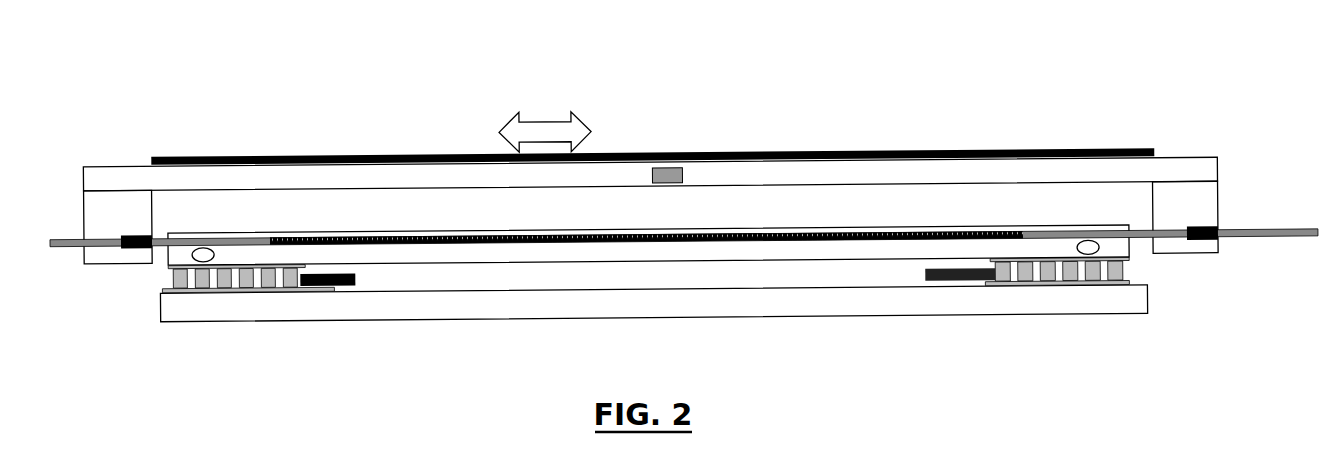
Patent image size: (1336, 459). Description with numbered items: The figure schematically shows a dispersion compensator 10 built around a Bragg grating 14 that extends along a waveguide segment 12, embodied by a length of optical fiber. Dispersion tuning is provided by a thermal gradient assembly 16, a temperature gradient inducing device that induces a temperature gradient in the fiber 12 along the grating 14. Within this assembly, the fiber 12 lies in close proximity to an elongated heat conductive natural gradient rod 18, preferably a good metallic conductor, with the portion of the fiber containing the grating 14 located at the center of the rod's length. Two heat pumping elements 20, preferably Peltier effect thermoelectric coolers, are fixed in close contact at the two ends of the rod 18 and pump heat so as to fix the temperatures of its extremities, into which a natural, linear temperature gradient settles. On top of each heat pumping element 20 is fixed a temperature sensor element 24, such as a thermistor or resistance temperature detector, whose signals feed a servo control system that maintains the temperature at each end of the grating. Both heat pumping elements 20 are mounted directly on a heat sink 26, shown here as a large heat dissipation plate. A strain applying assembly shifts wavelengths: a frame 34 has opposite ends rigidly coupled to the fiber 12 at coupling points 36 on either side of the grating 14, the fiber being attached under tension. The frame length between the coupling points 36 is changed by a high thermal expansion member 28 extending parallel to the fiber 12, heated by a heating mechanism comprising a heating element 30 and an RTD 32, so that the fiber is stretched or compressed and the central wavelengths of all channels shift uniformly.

The dispersion compensator 10 is at (1032, 125).
The waveguide segment 12 is at (1243, 228).
The Bragg grating 14 is at (845, 241).
The thermal gradient assembly 16 is at (1247, 313).
The natural gradient rod 18 is at (565, 255).
The heat pumping elements 20 is at (238, 272).
The temperature sensor element 24 is at (198, 254).
The heat sink 26 is at (410, 322).
The high thermal expansion member 28 is at (327, 183).
The heating element 30 is at (757, 152).
The RTD 32 is at (673, 175).
The frame 34 is at (102, 213).
The coupling points 36 is at (133, 237).